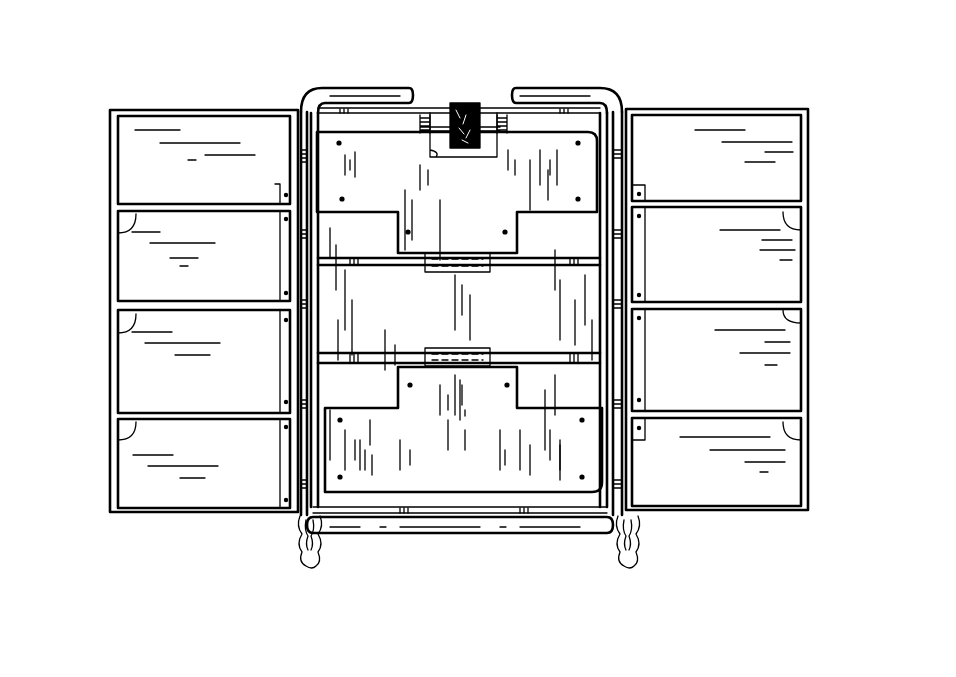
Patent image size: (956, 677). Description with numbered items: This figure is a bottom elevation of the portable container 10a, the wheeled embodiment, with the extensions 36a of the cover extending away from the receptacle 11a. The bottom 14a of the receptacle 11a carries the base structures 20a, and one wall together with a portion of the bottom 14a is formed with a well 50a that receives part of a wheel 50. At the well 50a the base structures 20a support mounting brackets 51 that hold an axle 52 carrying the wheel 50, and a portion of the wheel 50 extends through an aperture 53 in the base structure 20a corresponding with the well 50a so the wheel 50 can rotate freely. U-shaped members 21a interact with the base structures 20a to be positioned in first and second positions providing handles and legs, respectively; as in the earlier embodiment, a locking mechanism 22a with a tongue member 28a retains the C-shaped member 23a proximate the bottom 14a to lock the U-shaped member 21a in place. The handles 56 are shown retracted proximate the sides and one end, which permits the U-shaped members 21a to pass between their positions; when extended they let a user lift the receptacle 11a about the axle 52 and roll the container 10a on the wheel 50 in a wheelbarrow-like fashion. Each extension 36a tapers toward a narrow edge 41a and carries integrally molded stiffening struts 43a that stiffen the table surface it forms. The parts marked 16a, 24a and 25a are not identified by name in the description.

The container 10a is at (702, 82).
The receptacle 11a is at (614, 66).
The bottom 14a is at (352, 384).
The frame rails 16a is at (364, 74).
The base structure 20a is at (574, 505).
The U-shaped member 21a is at (312, 88).
The locking mechanism 22a is at (453, 349).
The C-shaped member 23a is at (566, 252).
The right top rail 24a is at (538, 92).
The hinge pin 25a is at (300, 106).
The tongue member 28a is at (450, 254).
The extension 36a is at (110, 297).
The narrow edge 41a is at (809, 120).
The stiffening strut 43a is at (119, 228).
The wheel 50 is at (456, 104).
The well 50a is at (472, 104).
The mounting bracket 51 is at (418, 138).
The axle 52 is at (426, 116).
The aperture 53 is at (438, 156).
The handle 56 is at (314, 566).